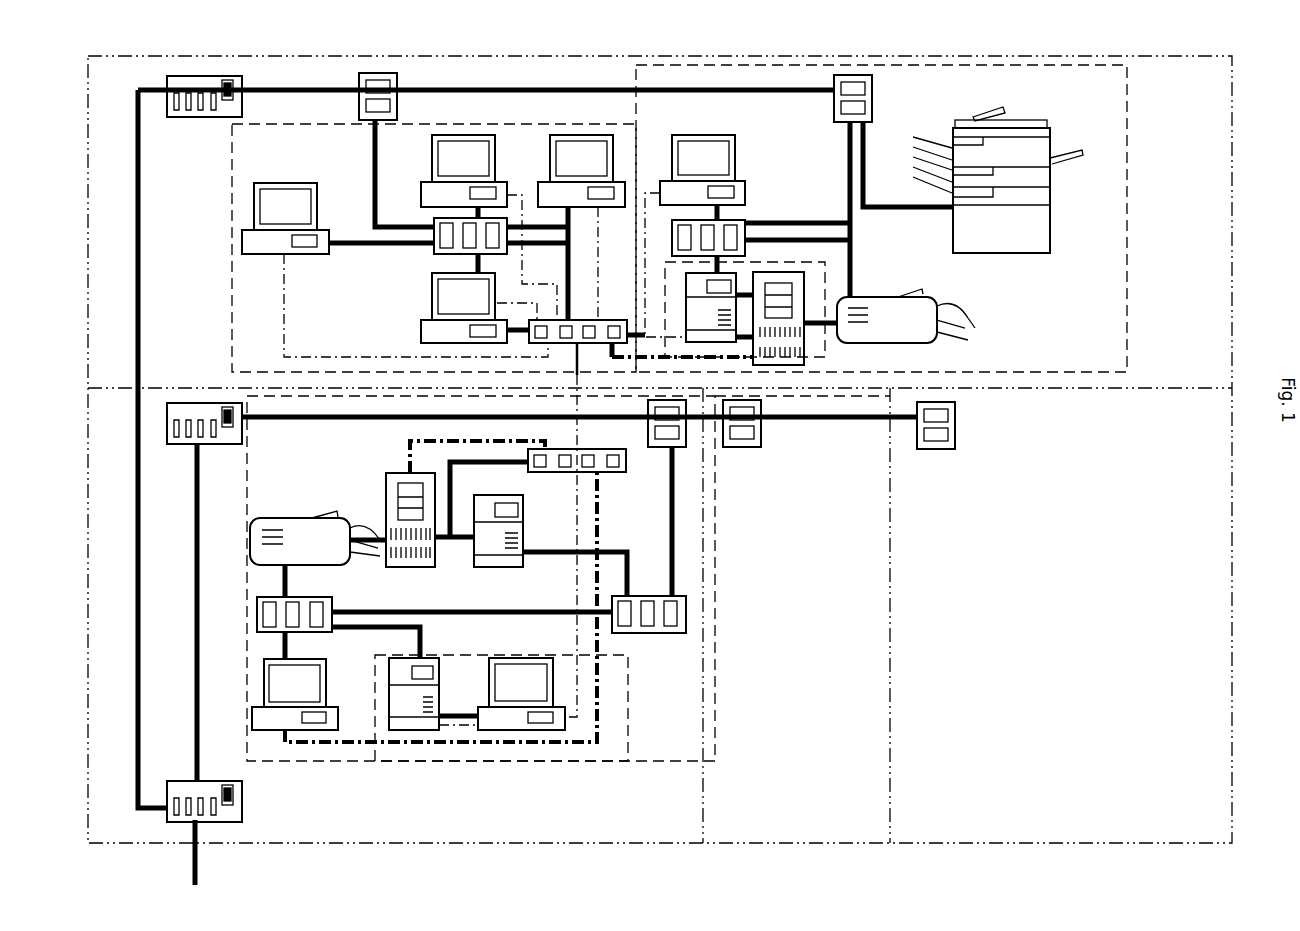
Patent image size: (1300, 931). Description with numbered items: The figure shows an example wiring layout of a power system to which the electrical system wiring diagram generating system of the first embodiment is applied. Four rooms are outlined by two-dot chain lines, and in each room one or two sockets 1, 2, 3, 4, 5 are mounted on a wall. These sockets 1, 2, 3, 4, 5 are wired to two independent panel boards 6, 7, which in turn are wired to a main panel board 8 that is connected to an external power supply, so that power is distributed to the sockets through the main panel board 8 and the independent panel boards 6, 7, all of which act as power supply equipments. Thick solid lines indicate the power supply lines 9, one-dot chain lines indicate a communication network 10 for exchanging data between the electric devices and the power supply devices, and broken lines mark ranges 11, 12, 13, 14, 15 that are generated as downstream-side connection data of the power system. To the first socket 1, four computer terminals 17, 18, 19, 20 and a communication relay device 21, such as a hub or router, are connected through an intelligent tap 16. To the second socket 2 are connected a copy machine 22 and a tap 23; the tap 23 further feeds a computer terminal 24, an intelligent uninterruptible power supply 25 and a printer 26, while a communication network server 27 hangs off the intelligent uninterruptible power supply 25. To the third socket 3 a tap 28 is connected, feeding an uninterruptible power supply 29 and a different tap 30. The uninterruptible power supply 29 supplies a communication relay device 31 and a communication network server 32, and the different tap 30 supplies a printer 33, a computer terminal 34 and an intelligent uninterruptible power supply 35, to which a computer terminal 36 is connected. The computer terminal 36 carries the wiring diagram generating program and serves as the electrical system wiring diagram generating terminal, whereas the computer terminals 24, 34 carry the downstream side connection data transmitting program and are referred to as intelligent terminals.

The first socket 1 is at (384, 80).
The second socket 2 is at (856, 82).
The third socket 3 is at (672, 448).
The socket 4 is at (745, 440).
The socket 5 is at (940, 433).
The independent panel board 6 is at (214, 82).
The independent panel board 7 is at (180, 428).
The main panel board 8 is at (180, 792).
The power supply lines 9 is at (138, 326).
The communication network 10 is at (598, 670).
The range 11 is at (256, 149).
The range 12 is at (1118, 103).
The range 13 is at (820, 357).
The range 14 is at (687, 700).
The range 15 is at (612, 731).
The intelligent tap 16 is at (447, 232).
The computer terminal 17 is at (262, 244).
The computer terminal 18 is at (468, 150).
The computer terminal 19 is at (586, 152).
The computer terminal 20 is at (433, 328).
The communication relay device 21 is at (548, 343).
The copy machine 22 is at (1028, 240).
The tap 23 is at (738, 222).
The computer terminal 24 is at (703, 155).
The intelligent uninterruptible power supply 25 is at (701, 329).
The printer 26 is at (952, 320).
The communication network server 27 is at (787, 353).
The tap 28 is at (672, 607).
The uninterruptible power supply 29 is at (513, 553).
The different tap 30 is at (293, 607).
The communication relay device 31 is at (605, 460).
The communication network server 32 is at (390, 478).
The printer 33 is at (293, 532).
The computer terminal 34 is at (290, 687).
The intelligent uninterruptible power supply 35 is at (405, 715).
The computer terminal 36 is at (493, 715).